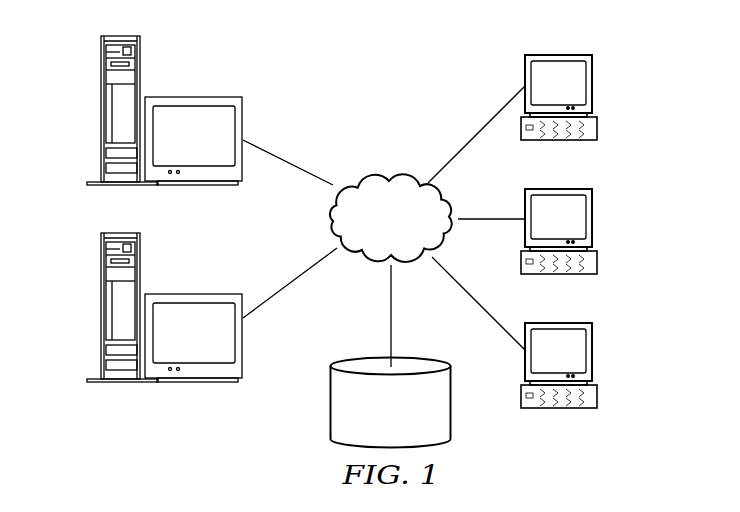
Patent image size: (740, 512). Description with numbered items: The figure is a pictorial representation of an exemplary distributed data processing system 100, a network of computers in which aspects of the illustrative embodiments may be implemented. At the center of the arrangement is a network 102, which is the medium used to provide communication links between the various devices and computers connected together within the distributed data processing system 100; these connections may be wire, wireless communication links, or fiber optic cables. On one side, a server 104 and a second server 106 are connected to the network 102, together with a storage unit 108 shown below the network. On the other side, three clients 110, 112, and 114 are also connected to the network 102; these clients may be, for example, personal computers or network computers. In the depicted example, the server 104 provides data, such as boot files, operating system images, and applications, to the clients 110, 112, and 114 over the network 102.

The distributed data processing system 100 is at (441, 62).
The network 102 is at (363, 171).
The server 104 is at (101, 112).
The server 106 is at (101, 312).
The storage unit 108 is at (330, 410).
The client 110 is at (593, 83).
The client 112 is at (594, 218).
The client 114 is at (593, 350).